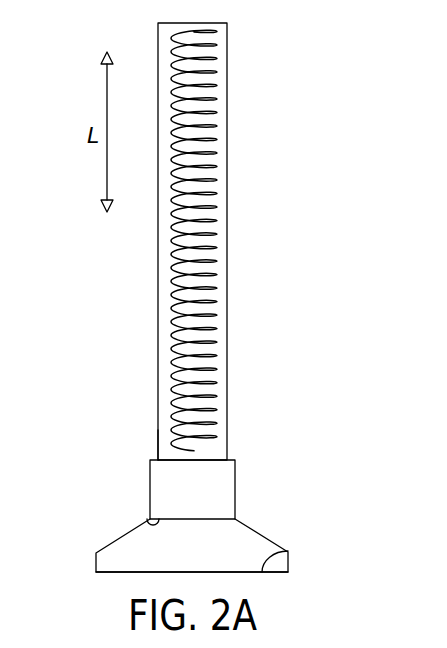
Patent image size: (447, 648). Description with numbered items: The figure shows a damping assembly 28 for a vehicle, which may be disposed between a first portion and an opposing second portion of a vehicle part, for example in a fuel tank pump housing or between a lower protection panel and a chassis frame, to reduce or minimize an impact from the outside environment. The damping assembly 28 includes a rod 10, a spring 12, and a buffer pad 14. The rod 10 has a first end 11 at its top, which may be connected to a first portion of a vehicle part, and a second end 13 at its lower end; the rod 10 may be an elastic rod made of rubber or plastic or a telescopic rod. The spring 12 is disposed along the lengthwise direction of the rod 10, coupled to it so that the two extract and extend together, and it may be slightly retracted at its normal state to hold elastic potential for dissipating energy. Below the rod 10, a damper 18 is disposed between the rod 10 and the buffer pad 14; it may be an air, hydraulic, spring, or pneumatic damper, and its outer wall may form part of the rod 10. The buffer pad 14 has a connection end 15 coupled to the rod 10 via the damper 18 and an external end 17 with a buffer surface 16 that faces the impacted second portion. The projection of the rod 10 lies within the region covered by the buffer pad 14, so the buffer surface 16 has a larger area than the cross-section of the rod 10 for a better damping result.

The rod 10 is at (232, 306).
The first end 11 is at (221, 39).
The spring 12 is at (206, 262).
The second end 13 is at (158, 448).
The buffer pad 14 is at (262, 530).
The connection end 15 is at (150, 521).
The buffer surface 16 is at (283, 551).
The external end 17 is at (118, 573).
The damper 18 is at (213, 480).
The damping assembly 28 is at (236, 142).